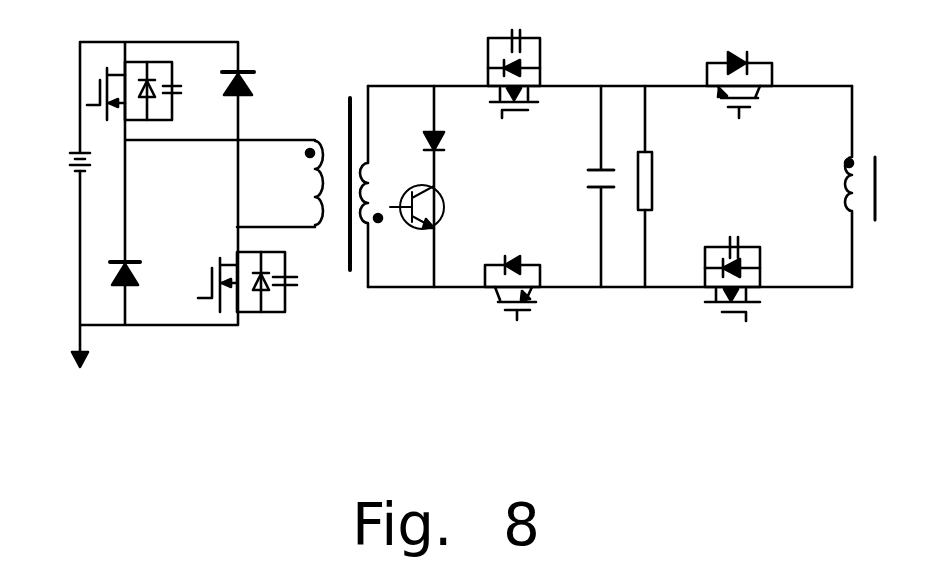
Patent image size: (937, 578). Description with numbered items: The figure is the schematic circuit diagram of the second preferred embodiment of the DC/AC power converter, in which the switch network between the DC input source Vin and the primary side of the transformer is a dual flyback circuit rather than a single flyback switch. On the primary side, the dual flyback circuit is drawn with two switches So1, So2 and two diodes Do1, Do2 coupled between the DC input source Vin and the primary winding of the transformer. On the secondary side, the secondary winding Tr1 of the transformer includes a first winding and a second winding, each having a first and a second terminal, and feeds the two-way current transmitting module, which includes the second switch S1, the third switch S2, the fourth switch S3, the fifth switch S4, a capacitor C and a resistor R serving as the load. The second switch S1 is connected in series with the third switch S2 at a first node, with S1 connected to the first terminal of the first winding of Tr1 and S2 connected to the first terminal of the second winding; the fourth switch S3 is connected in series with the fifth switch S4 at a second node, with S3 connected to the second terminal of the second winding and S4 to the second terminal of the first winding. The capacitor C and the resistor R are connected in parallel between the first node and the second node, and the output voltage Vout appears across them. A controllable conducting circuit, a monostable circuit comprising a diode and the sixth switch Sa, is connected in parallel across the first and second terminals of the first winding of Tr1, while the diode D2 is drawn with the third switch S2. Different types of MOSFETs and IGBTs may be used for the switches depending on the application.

The first primary-side switch (MOSFET) So1 is at (108, 91).
The second primary-side switch (MOSFET) So2 is at (225, 282).
The first clamp diode Do1 is at (262, 85).
The second clamp diode Do2 is at (142, 262).
The DC input source Vin is at (58, 160).
The secondary winding of the transformer Tr1 is at (606, 183).
The sixth switch Sa is at (434, 186).
The second switch S1 is at (514, 89).
The third switch S2 is at (739, 116).
The fourth switch S3 is at (718, 281).
The fifth switch S4 is at (502, 290).
The diode of switch S2 D2 is at (741, 51).
The output voltage Vout is at (579, 186).
The capacitor C is at (586, 191).
The resistor R is at (659, 186).